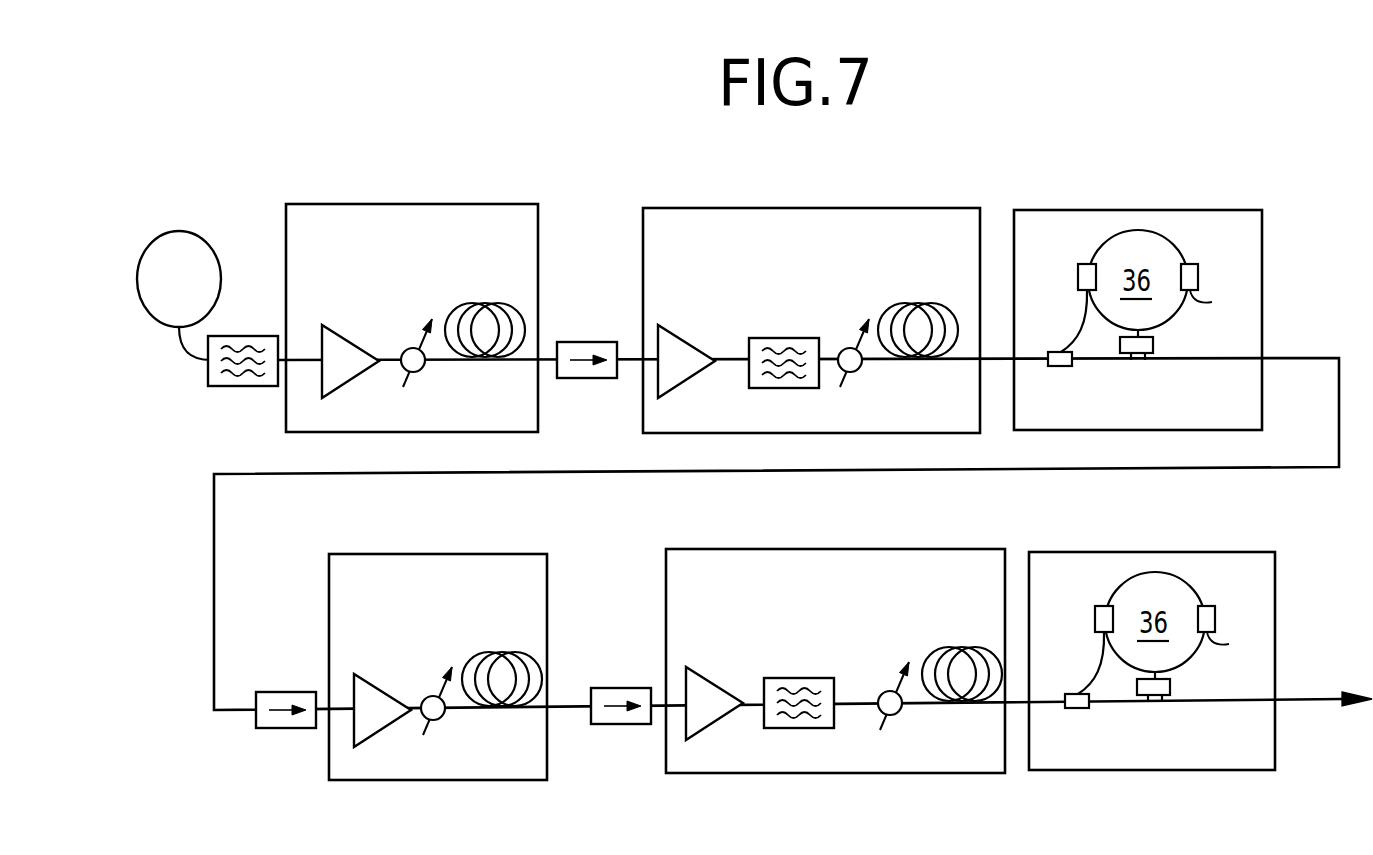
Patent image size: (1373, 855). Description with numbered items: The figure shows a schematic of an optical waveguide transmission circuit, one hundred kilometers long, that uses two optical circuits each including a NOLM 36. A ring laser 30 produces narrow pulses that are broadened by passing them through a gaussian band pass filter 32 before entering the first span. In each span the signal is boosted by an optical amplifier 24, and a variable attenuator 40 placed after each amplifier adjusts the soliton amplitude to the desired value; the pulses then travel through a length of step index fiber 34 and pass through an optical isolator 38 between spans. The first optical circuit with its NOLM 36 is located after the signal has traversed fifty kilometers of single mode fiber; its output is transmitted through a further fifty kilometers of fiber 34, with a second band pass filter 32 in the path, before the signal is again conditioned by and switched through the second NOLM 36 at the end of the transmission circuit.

The optical amplifier 24 is at (342, 335).
The ring laser 30 is at (178, 231).
The band pass filter 32 is at (238, 386).
The step index fiber 34 is at (466, 303).
The NOLM 36 is at (1138, 469).
The optical isolator 38 is at (586, 380).
The variable attenuator 40 is at (422, 369).